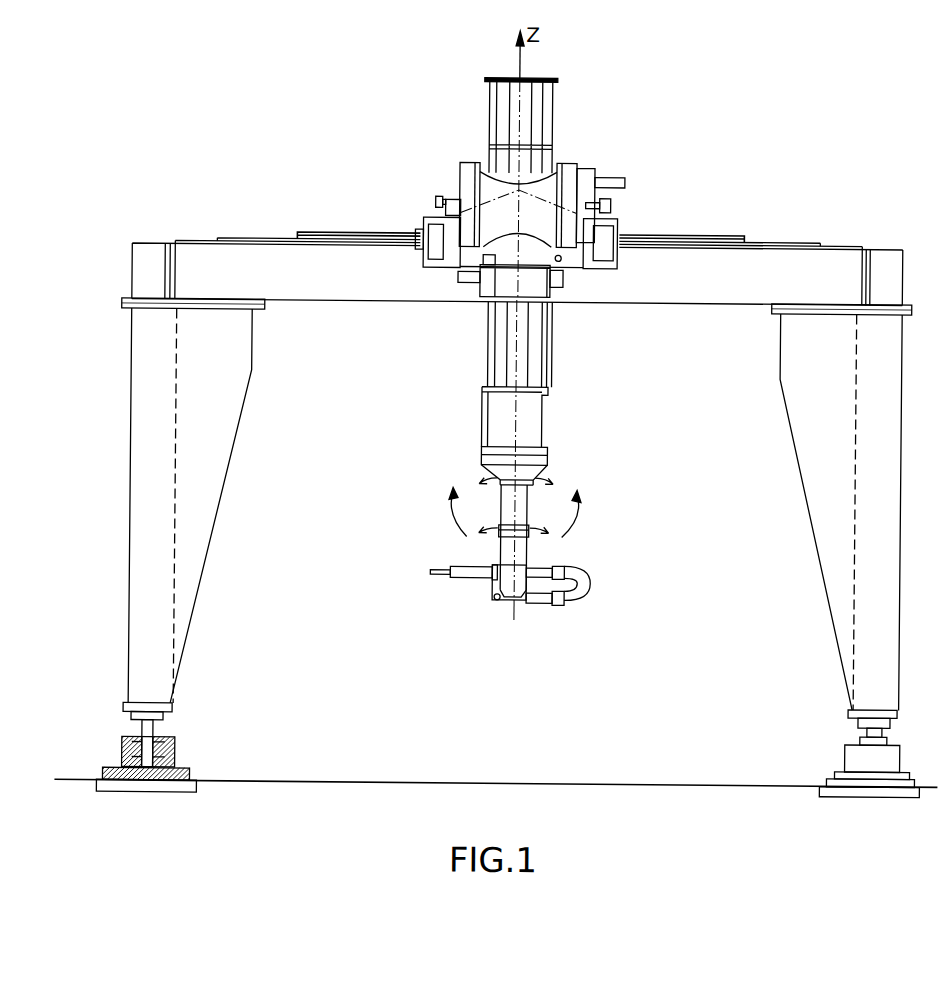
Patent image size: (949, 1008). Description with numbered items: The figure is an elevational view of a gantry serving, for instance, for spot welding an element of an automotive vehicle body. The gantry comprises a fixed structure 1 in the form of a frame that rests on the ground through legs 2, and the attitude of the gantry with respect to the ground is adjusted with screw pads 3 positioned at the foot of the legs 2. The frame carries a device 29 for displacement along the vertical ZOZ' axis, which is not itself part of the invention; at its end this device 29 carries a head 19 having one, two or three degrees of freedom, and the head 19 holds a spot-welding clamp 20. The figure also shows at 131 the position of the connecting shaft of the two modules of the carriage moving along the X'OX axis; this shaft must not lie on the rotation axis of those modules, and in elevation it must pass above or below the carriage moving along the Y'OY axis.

The fixed structure 1 is at (879, 249).
The legs 2 is at (221, 441).
The screw pads 3 is at (176, 737).
The head 19 is at (504, 495).
The spot-welding clamp 20 is at (538, 601).
The device for displacement along the ZOZ' axis 29 is at (548, 181).
The position of the connecting shaft 131 is at (568, 257).